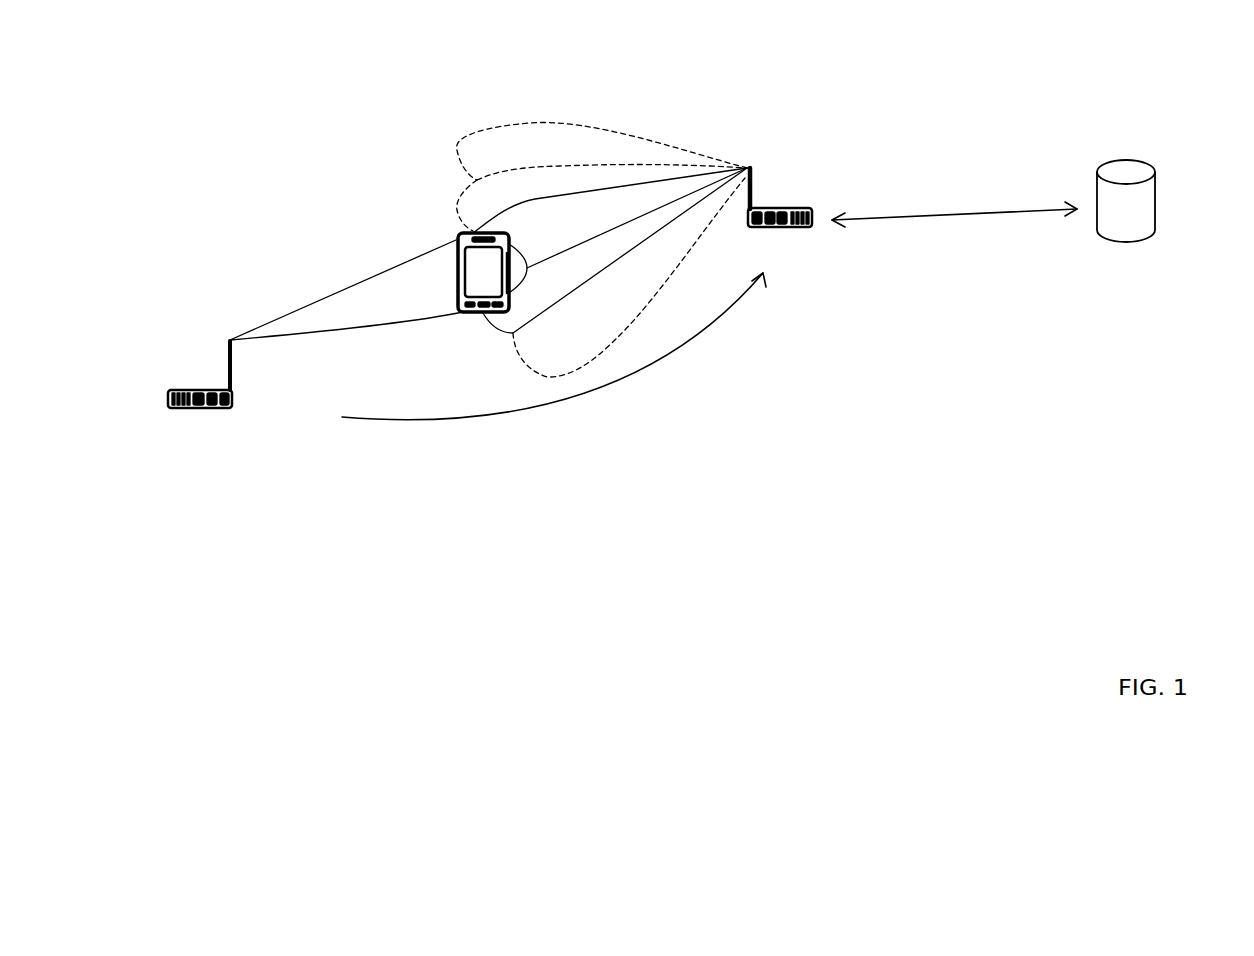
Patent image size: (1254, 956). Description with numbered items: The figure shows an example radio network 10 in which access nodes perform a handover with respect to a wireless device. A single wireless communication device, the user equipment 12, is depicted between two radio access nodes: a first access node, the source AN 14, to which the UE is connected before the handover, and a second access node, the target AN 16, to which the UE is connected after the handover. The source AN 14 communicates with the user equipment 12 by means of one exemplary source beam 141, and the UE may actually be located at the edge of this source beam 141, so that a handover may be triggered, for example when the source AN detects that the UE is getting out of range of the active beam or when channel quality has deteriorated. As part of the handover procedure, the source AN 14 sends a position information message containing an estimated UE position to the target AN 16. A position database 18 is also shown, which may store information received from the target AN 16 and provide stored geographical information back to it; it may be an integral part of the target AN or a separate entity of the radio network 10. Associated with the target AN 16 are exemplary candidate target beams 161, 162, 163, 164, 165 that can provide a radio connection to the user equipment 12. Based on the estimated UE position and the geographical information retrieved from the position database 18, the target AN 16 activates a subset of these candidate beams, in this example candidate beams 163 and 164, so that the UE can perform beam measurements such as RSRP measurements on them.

The radio network 10 is at (709, 345).
The user equipment 12 is at (452, 243).
The source AN 14 is at (208, 442).
The target AN 16 is at (793, 260).
The position database 18 is at (1128, 246).
The source beam 141 is at (307, 313).
The candidate target beam 161 is at (548, 148).
The candidate target beam 162 is at (588, 178).
The candidate target beam 163 is at (630, 202).
The candidate target beam 164 is at (678, 210).
The candidate target beam 165 is at (725, 203).